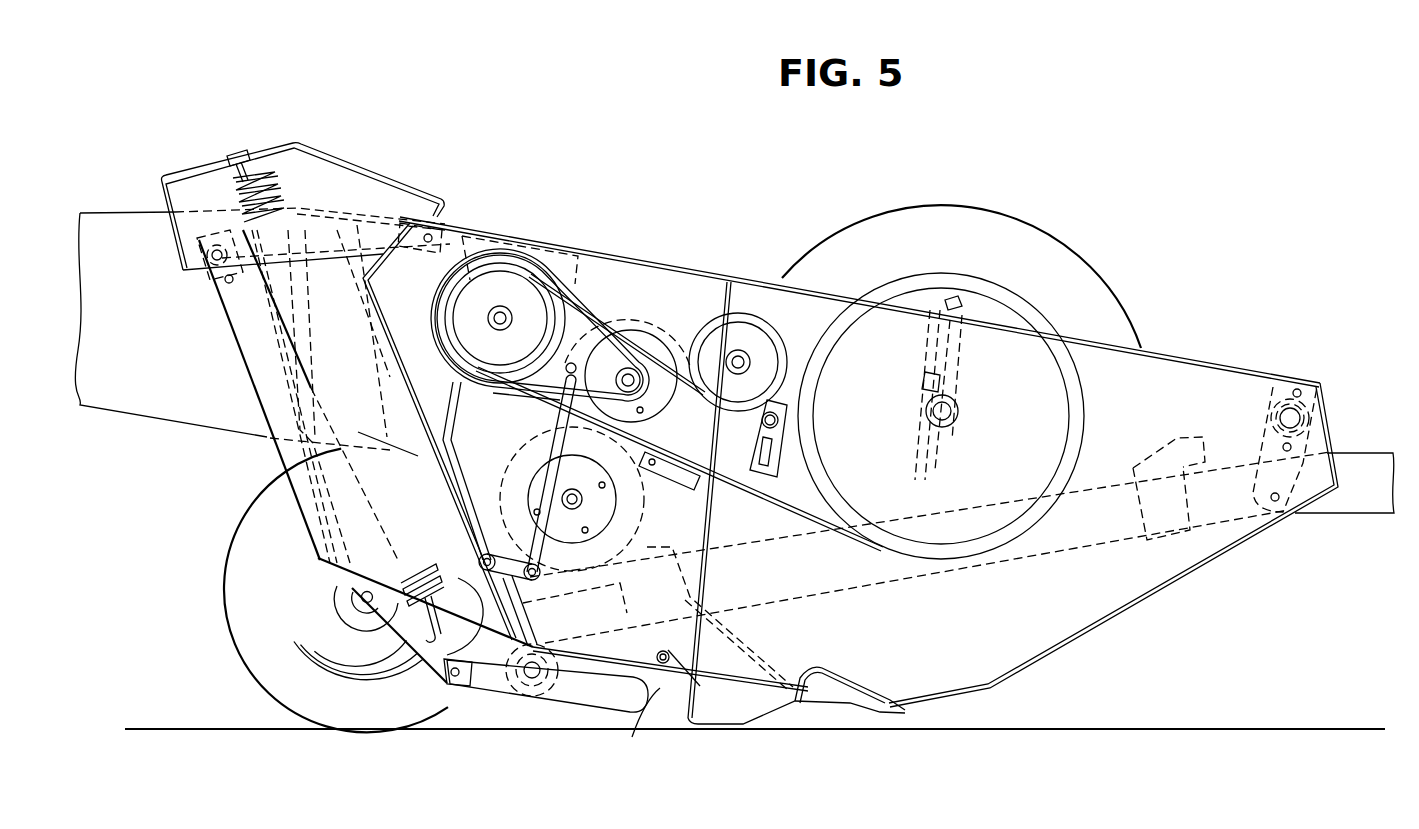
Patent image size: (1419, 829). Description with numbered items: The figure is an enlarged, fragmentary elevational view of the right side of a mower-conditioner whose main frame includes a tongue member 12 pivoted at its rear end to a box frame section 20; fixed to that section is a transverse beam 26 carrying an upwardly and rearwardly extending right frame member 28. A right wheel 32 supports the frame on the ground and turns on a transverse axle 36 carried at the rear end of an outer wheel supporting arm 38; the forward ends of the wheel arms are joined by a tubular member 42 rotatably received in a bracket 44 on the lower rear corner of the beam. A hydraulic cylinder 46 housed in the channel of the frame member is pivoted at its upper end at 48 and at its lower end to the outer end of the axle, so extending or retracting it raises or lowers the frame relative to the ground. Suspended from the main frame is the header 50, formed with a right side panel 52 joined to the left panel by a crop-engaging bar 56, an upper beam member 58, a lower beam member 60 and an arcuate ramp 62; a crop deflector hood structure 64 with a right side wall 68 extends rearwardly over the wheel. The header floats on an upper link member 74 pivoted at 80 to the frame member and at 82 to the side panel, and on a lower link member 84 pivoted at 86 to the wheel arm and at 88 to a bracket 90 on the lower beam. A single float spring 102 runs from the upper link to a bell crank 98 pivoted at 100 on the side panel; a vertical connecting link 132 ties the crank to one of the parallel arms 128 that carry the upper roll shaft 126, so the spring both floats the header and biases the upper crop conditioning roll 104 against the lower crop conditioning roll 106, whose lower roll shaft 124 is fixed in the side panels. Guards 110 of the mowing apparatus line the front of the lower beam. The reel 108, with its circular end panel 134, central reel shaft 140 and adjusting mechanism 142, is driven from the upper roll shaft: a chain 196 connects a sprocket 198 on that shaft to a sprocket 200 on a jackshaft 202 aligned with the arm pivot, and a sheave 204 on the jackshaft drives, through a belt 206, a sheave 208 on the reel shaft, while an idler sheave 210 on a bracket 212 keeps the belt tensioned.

The tongue member 12 is at (1353, 460).
The box frame section 20 is at (1080, 557).
The transverse beam 26 is at (628, 613).
The right frame member 28 is at (280, 455).
The right wheel 32 is at (230, 590).
The transverse axle 36 is at (367, 603).
The outer wheel supporting arm 38 is at (432, 672).
The tubular member 42 is at (555, 672).
The bracket 44 is at (492, 695).
The hydraulic cylinder 46 is at (257, 393).
The upper cylinder pivot 48 is at (200, 283).
The header 50 is at (794, 186).
The right side panel 52 is at (1185, 373).
The crop-engaging bar 56 is at (1283, 400).
The upper beam member 58 is at (580, 247).
The lower beam member 60 is at (688, 700).
The arcuate ramp 62 is at (740, 647).
The crop deflector hood structure 64 is at (131, 192).
The right side wall 68 is at (123, 403).
The upper link member 74 is at (346, 160).
The upper link frame pivot 80 is at (212, 254).
The upper link header pivot 82 is at (428, 232).
The lower link member 84 is at (580, 702).
The lower link rear pivot 86 is at (460, 687).
The lower link front pivot 88 is at (635, 712).
The bracket 90 is at (695, 688).
The bell crank 98 is at (460, 582).
The bell crank pivot 100 is at (488, 478).
The float spring 102 is at (277, 183).
The upper crop conditioning roll 104 is at (658, 313).
The lower crop conditioning roll 106 is at (640, 532).
The reel 108 is at (1051, 222).
The guards 110 is at (925, 712).
The lower roll shaft 124 is at (572, 508).
The upper roll shaft 126 is at (640, 375).
The parallel arms 128 is at (572, 408).
The vertical connecting link 132 is at (542, 440).
The circular end panel 134 is at (1094, 276).
The central reel shaft 140 is at (950, 420).
The adjusting mechanism 142 is at (978, 405).
The chain 196 is at (502, 312).
The sprocket 198 is at (613, 370).
The sprocket 200 is at (585, 352).
The jackshaft 202 is at (497, 250).
The sheave 204 is at (466, 272).
The belt 206 is at (733, 479).
The sheave 208 is at (936, 280).
The idler sheave 210 is at (748, 313).
The bracket 212 is at (748, 446).